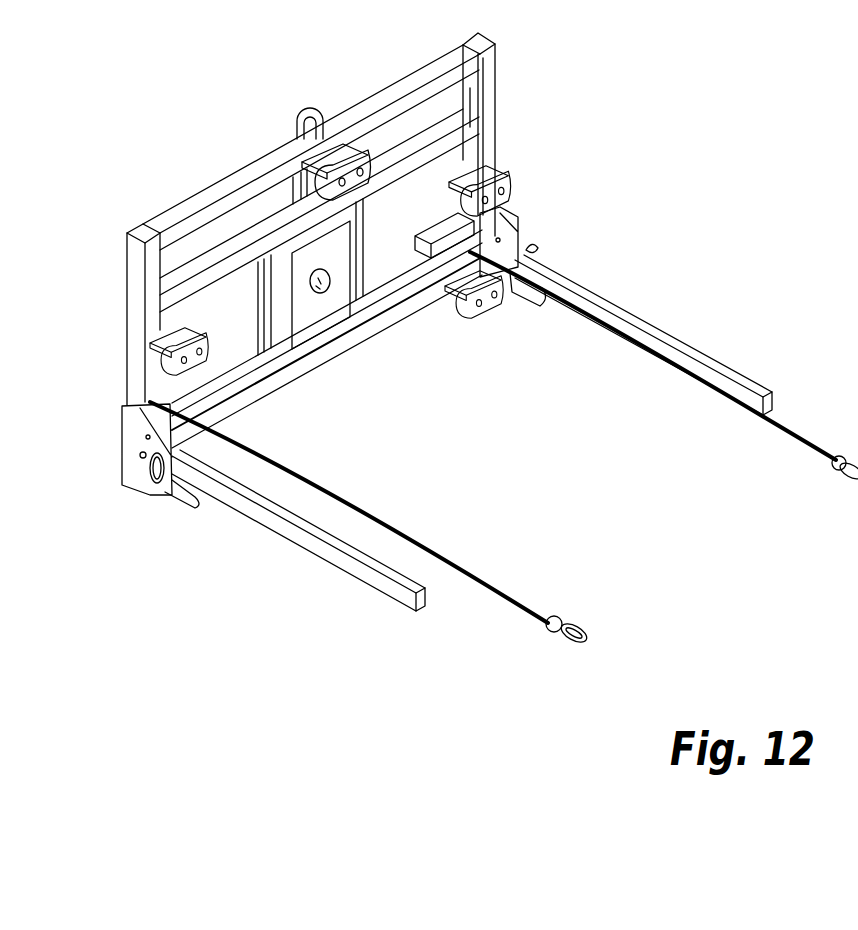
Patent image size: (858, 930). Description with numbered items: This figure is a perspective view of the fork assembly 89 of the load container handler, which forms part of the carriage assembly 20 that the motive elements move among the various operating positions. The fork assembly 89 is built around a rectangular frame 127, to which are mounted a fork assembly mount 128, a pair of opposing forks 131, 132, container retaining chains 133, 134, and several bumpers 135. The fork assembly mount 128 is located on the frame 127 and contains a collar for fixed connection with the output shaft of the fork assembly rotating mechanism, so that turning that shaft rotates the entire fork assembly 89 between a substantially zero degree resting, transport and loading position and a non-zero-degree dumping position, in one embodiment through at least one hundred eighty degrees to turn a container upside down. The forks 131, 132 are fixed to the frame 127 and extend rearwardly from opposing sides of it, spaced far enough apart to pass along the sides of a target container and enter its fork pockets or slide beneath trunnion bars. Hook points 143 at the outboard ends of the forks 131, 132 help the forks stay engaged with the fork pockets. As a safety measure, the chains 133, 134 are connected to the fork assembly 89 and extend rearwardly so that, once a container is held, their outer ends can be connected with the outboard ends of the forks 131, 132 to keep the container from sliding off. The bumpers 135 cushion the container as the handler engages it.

The carriage assembly 20 is at (693, 85).
The fork assembly 89 is at (222, 173).
The rectangular frame 127 is at (125, 293).
The fork assembly mount 128 is at (365, 265).
The fork 131 is at (365, 583).
The fork 132 is at (677, 335).
The container retaining chain 133 is at (458, 565).
The container retaining chain 134 is at (783, 433).
The bumper 135 is at (376, 157).
The hook point 143 is at (420, 588).